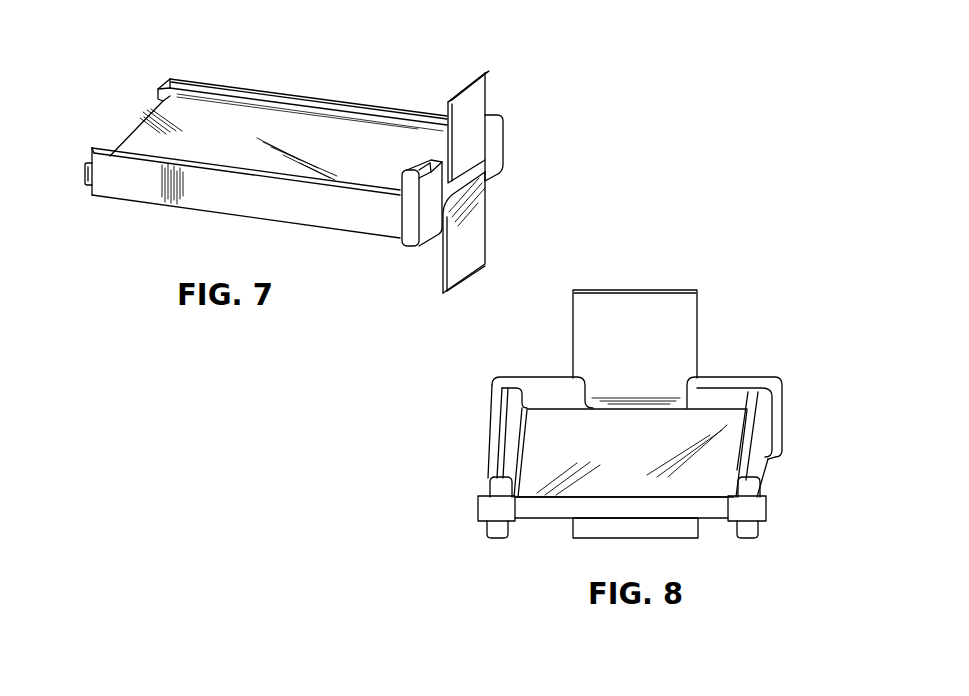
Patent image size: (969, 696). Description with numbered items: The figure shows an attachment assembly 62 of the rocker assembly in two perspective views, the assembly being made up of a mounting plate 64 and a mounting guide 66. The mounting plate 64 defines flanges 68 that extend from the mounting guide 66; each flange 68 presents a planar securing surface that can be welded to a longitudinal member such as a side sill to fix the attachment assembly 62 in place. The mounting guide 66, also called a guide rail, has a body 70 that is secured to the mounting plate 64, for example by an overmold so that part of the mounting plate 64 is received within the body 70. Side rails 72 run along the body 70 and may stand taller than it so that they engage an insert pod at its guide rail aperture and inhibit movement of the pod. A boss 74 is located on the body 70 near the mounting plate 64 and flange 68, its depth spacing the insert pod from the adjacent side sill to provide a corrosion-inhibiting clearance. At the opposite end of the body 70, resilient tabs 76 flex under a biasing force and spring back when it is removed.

In FIG. 7, the attachment assembly 62 is at (194, 50).
In FIG. 8, the attachment assembly 62 is at (724, 258).
In FIG. 7, the mounting plate 64 is at (488, 92).
In FIG. 8, the mounting plate 64 is at (573, 333).
In FIG. 7, the mounting guide 66 is at (138, 131).
In FIG. 8, the mounting guide 66 is at (548, 520).
In FIG. 7, the flange 68 is at (470, 131).
In FIG. 7, the body 70 is at (374, 140).
In FIG. 8, the body 70 is at (637, 423).
In FIG. 7, the side rail 72 is at (305, 93).
In FIG. 8, the side rail 72 is at (490, 462).
In FIG. 7, the boss 74 is at (405, 248).
In FIG. 8, the boss 74 is at (735, 378).
In FIG. 7, the resilient tab 76 is at (87, 176).
In FIG. 8, the resilient tab 76 is at (482, 521).